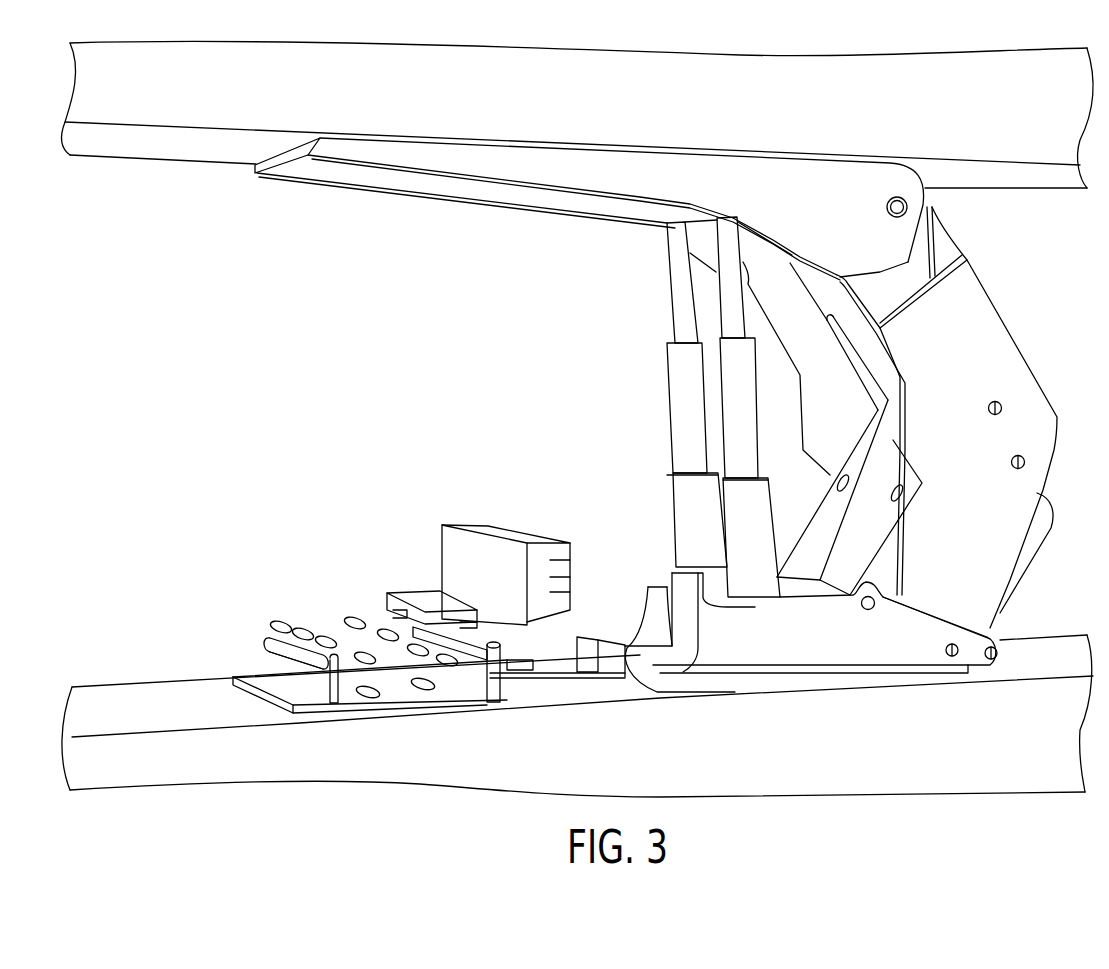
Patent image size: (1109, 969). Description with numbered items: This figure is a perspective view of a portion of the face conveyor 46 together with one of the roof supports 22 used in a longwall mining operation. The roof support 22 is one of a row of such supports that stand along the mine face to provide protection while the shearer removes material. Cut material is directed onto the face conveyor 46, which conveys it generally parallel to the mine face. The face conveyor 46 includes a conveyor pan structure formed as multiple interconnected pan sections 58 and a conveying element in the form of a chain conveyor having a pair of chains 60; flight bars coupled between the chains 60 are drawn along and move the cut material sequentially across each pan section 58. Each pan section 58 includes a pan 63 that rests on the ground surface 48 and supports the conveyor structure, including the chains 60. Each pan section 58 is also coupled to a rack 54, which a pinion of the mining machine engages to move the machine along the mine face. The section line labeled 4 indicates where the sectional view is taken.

The roof support 22 is at (633, 305).
The face conveyor 46 is at (292, 597).
The ground surface 48 is at (120, 694).
The rack 54 is at (416, 597).
The pan section 58 is at (266, 645).
The chains 60 is at (336, 630).
The pan 63 is at (412, 667).
The section line 4- 4 is at (178, 665).